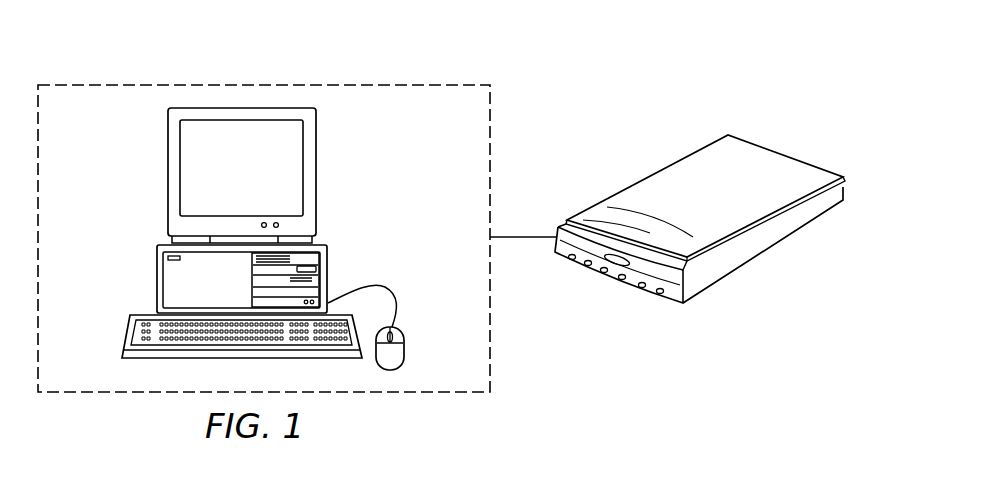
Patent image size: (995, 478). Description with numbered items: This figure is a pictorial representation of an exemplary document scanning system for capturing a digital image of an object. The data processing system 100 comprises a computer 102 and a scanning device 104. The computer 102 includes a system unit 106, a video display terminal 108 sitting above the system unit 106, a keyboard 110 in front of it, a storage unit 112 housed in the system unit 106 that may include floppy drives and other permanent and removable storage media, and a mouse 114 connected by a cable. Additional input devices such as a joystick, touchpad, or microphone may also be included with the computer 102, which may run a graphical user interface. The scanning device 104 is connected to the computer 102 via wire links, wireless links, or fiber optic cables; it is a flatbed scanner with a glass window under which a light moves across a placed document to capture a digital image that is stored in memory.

The data processing system 100 is at (615, 84).
The computer 102 is at (477, 125).
The scanning device 104 is at (733, 207).
The system unit 106 is at (157, 268).
The video display terminal 108 is at (317, 172).
The keyboard 110 is at (128, 330).
The storage unit 112 is at (252, 275).
The mouse 114 is at (403, 357).